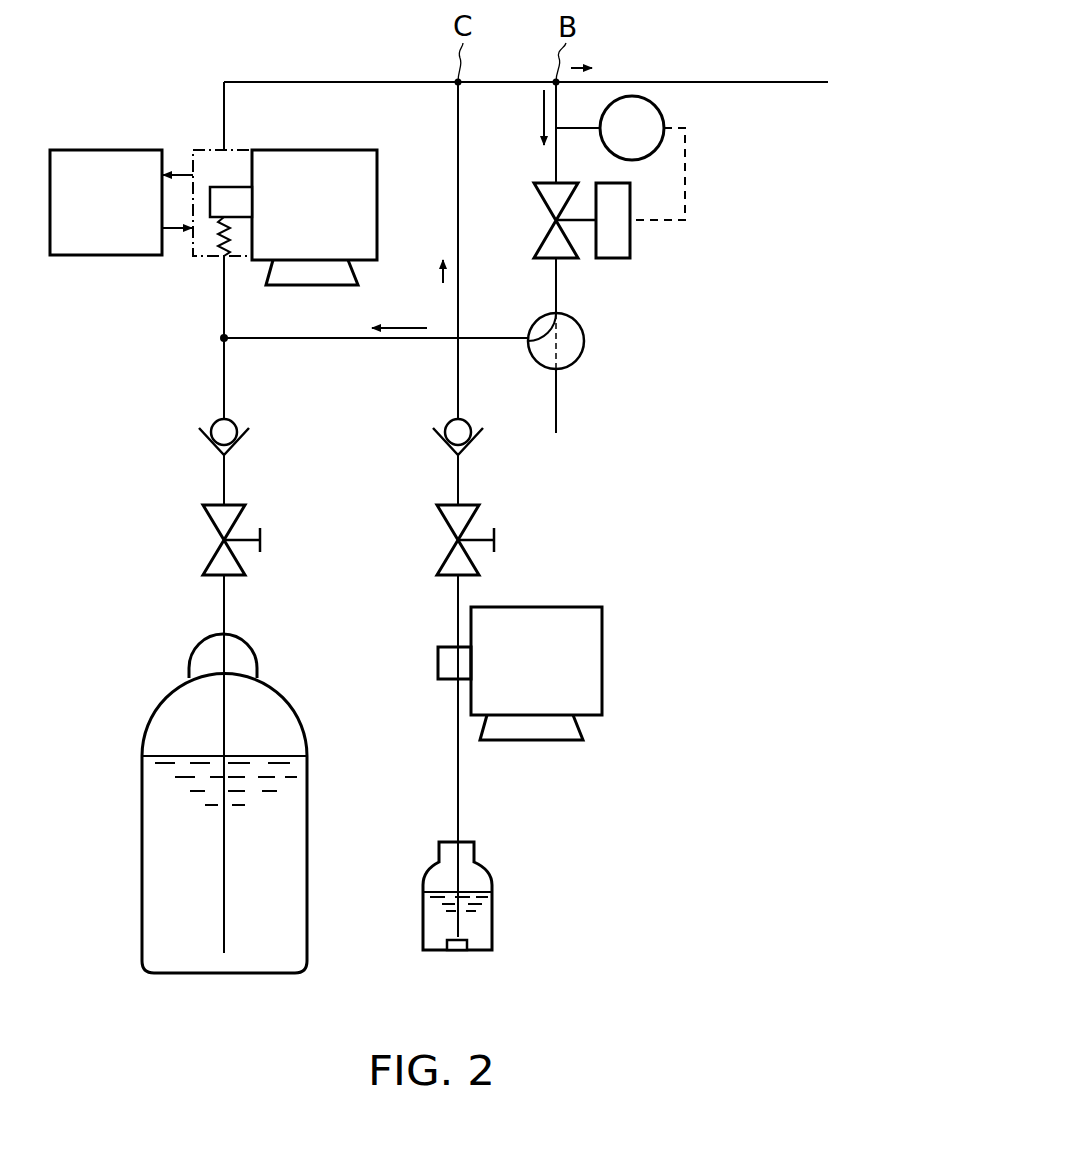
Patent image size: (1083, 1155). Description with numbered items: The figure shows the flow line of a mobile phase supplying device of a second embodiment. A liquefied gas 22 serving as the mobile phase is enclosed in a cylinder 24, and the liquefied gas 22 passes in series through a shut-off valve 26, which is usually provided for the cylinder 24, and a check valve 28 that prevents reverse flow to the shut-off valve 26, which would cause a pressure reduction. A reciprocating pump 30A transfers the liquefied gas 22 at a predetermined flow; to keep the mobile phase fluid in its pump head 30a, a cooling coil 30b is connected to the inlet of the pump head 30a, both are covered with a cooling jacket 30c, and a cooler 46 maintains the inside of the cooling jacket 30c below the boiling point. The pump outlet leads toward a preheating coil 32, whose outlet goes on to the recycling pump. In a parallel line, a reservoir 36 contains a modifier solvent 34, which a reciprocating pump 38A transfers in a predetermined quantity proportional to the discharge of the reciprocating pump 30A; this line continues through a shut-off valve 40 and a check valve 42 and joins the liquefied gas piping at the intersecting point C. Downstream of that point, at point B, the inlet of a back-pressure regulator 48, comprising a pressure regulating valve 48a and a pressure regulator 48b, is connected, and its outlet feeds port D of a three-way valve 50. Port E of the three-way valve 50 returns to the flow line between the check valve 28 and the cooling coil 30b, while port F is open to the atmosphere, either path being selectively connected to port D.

The liquefied gas 22 is at (255, 755).
The cylinder 24 is at (308, 800).
The shut-off valve 26 is at (212, 562).
The check valve 28 is at (215, 445).
The reciprocating pump 30A is at (377, 230).
The pump head 30a is at (212, 220).
The cooling coil 30b is at (228, 240).
The cooling jacket 30c is at (240, 150).
The preheating coil 32 is at (753, 69).
The modifier solvent 34 is at (475, 885).
The reservoir 36 is at (492, 903).
The reciprocating pump 38A is at (602, 648).
The shut-off valve 40 is at (448, 528).
The check valve 42 is at (449, 445).
The cooler 46 is at (120, 148).
The back-pressure regulator 48 is at (662, 238).
The pressure regulating valve 48a is at (545, 205).
The pressure regulator 48b is at (663, 118).
The three-way valve 50 is at (583, 352).